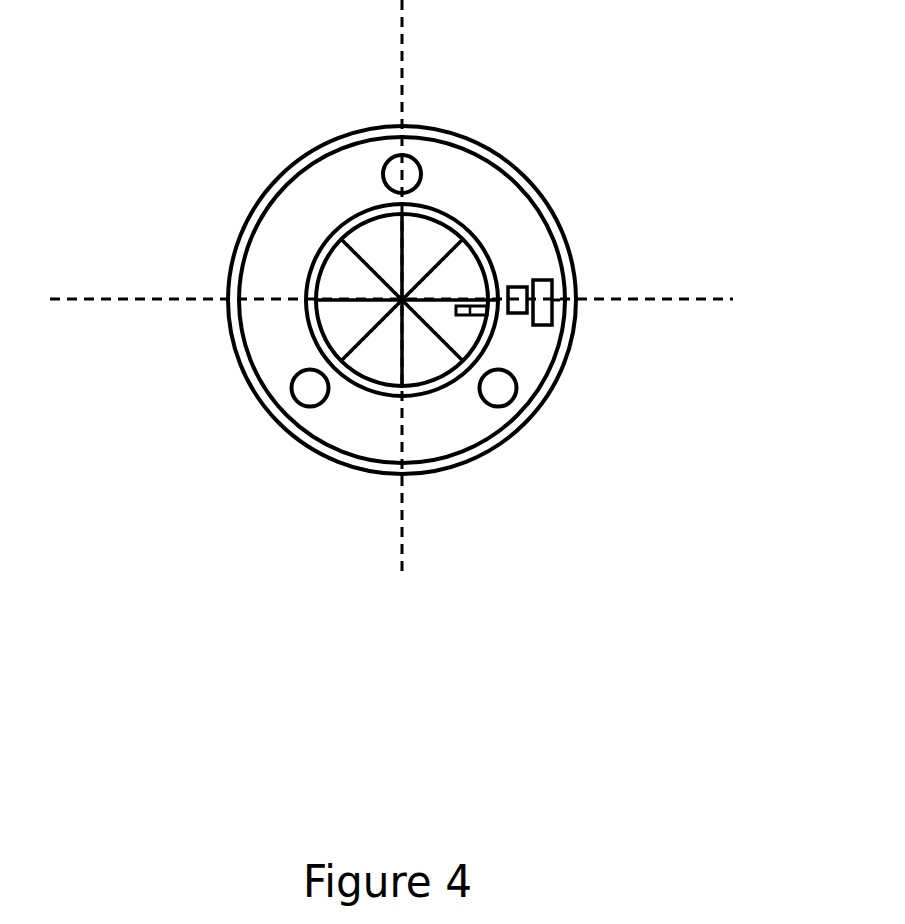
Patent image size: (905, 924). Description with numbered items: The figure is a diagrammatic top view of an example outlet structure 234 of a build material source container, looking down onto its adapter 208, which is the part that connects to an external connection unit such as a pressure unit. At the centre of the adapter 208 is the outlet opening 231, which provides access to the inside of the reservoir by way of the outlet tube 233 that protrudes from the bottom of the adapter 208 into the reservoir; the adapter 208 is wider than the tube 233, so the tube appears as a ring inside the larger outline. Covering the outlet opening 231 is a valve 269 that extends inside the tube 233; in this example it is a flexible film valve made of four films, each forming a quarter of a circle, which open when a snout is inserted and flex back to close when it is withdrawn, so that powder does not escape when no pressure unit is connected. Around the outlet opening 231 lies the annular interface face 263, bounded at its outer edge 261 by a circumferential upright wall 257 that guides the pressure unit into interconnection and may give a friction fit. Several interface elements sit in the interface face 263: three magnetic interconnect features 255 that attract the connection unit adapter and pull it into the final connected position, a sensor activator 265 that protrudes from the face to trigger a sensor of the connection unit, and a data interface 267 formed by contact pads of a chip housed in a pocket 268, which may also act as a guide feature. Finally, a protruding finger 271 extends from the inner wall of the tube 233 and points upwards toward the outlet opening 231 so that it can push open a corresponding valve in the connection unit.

The adapter 208 is at (582, 223).
The outlet opening 231 is at (377, 382).
The outlet tube 233 is at (312, 330).
The outlet structure 234 is at (558, 158).
The interconnect feature 255 is at (411, 172).
The upright wall 257 is at (293, 168).
The outer edge 261 is at (242, 232).
The interface face 263 is at (290, 223).
The sensor activator 265 is at (515, 285).
The data interface 267 is at (542, 288).
The pocket 268 is at (555, 293).
The valve 269 is at (337, 273).
The protruding finger 271 is at (467, 311).